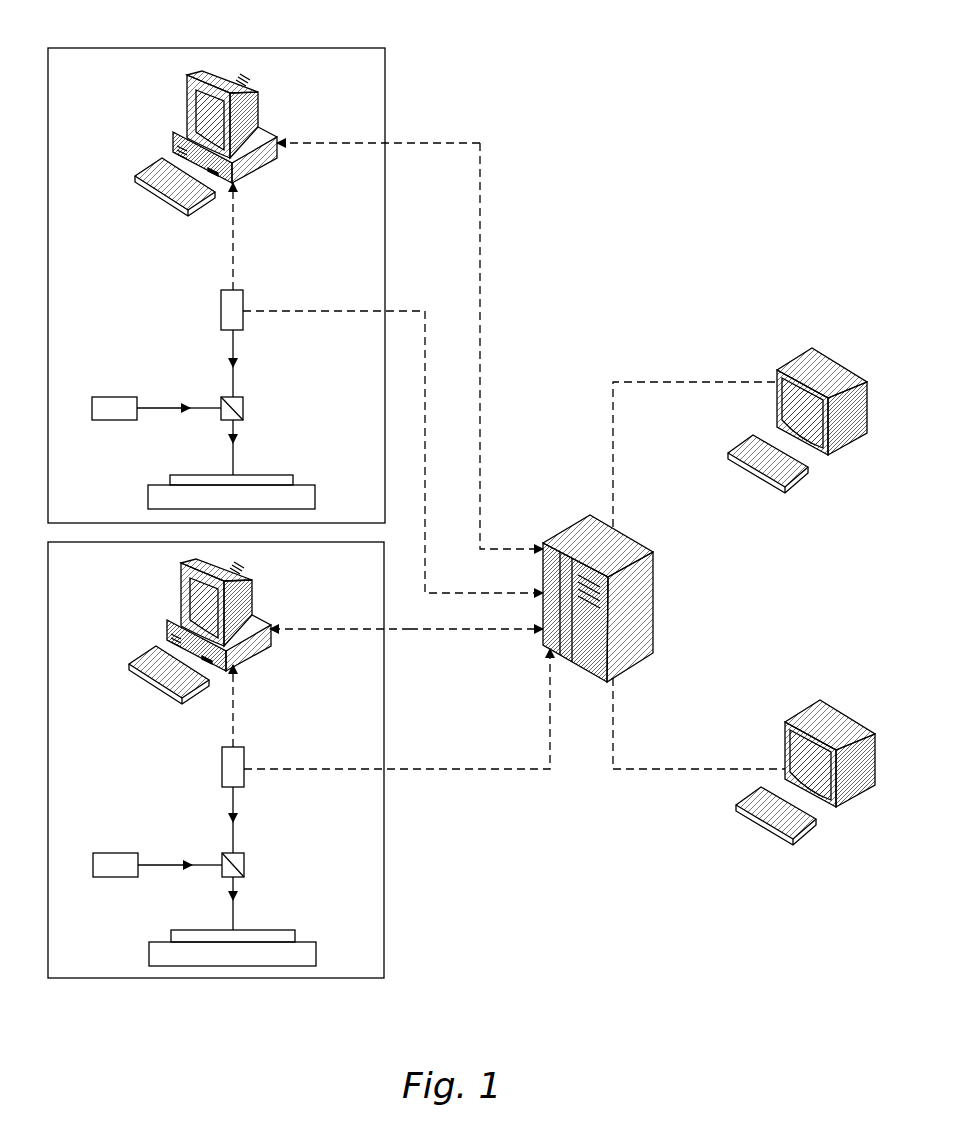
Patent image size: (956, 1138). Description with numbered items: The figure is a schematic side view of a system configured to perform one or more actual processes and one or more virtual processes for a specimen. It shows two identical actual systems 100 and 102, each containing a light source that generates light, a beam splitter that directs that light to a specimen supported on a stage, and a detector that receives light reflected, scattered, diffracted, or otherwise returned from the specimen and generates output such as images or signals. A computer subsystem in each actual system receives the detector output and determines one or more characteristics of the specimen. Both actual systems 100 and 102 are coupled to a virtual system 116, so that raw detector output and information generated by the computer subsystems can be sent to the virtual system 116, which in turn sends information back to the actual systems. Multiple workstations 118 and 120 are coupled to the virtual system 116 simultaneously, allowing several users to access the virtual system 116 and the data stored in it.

The actual system 100 is at (108, 46).
The actual system 102 is at (128, 979).
The virtual system 116 is at (570, 522).
The workstation 118 is at (792, 357).
The workstation 120 is at (795, 712).